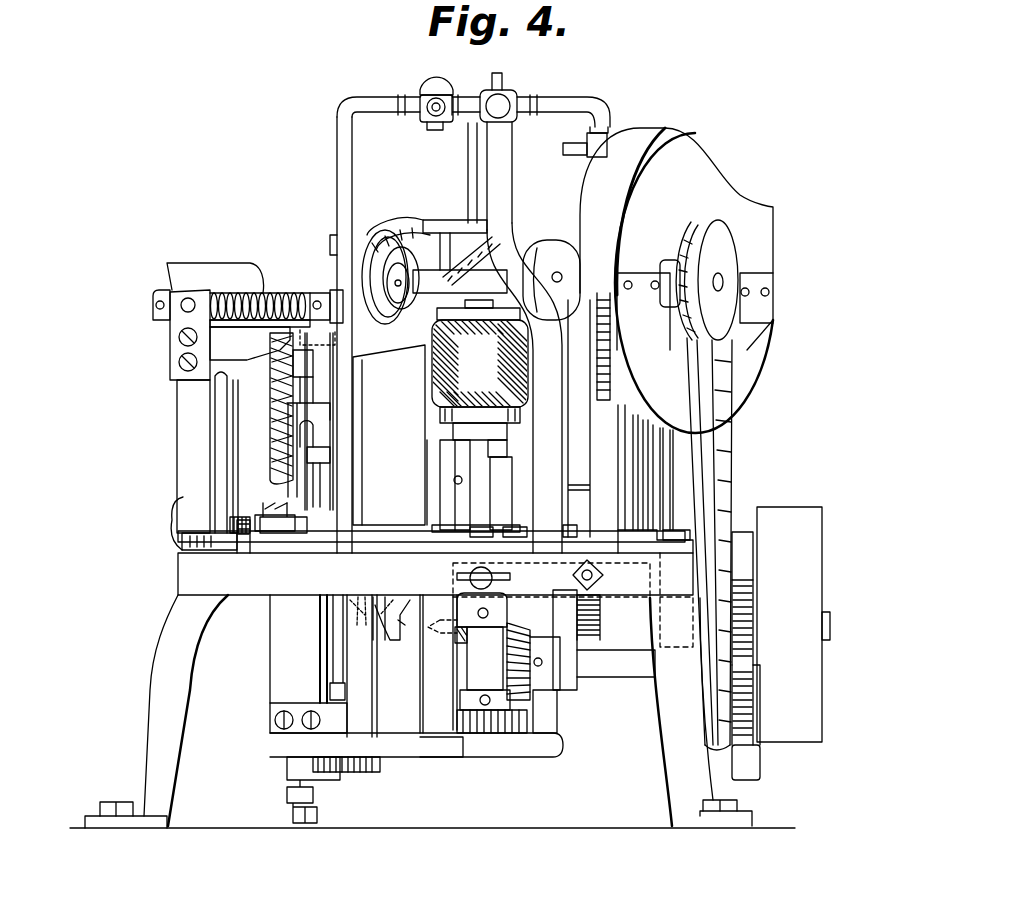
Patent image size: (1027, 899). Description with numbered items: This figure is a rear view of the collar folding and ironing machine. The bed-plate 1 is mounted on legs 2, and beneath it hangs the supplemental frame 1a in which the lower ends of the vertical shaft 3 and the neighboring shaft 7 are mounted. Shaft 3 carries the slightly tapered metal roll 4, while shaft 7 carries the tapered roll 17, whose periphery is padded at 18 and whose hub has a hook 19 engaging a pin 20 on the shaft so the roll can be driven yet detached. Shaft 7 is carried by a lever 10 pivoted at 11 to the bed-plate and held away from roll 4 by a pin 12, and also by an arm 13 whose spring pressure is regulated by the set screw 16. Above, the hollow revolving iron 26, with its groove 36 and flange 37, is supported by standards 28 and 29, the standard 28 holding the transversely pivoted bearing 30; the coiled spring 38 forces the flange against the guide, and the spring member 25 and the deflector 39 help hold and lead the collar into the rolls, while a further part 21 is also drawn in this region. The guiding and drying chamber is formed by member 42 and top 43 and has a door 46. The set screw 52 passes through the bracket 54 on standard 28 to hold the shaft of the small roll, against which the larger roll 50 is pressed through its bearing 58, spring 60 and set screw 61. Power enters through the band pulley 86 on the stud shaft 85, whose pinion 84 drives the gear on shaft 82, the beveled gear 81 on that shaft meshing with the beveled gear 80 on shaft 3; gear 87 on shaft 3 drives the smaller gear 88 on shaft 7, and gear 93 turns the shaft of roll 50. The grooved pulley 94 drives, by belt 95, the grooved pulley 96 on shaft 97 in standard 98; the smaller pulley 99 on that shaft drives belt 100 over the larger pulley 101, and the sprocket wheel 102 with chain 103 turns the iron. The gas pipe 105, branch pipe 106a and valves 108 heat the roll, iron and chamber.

The bed-plate 1 is at (260, 593).
The supplemental frame 1a is at (513, 750).
The legs 2 is at (663, 747).
The vertical shaft 3 is at (463, 667).
The metal roll 4 is at (443, 457).
The shaft 7 is at (485, 658).
The lever 10 is at (323, 537).
The pivot 11 is at (574, 531).
The pin 12 is at (253, 534).
The arm 13 is at (594, 600).
The set screw 16 is at (492, 578).
The tapered roll 17 is at (443, 413).
The padding 18 is at (457, 380).
The hook 19 is at (500, 453).
The pin 20 is at (580, 444).
The bracket 21 is at (336, 295).
The spring member 25 is at (527, 504).
The hollow revolving iron 26 is at (575, 240).
The standard 28 is at (187, 413).
The standard 29 is at (670, 485).
The transversely pivoted bearing 30 is at (200, 293).
The groove 36 is at (573, 230).
The flange 37 is at (531, 242).
The coiled spring 38 is at (287, 296).
The supplemental guide or deflector 39 is at (580, 445).
The member 42 is at (443, 510).
The top 43 is at (507, 640).
The door 46 is at (310, 497).
The roll 50 is at (283, 410).
The set screw 52 is at (357, 232).
The bracket 54 is at (267, 322).
The bearing 58 is at (233, 545).
The spring 60 is at (247, 510).
The set screw 61 is at (173, 531).
The beveled gear wheel 80 is at (495, 620).
The beveled gear wheel 81 is at (527, 703).
The shaft 82 is at (633, 671).
The pinion 84 is at (747, 629).
The stud shaft 85 is at (827, 618).
The band pulley 86 is at (810, 580).
The gear wheel 87 is at (527, 741).
The gear wheel 88 is at (500, 712).
The gear 93 is at (747, 693).
The grooved pulley 94 is at (700, 740).
The belt 95 is at (731, 497).
The grooved pulley 96 is at (720, 237).
The shaft 97 is at (723, 282).
The standard 98 is at (612, 470).
The grooved pulley 99 is at (393, 250).
The belt 100 is at (403, 248).
The grooved pulley 101 is at (431, 268).
The sprocket wheel 102 is at (611, 338).
The sprocket chain 103 is at (612, 372).
The gas pipe 105 is at (425, 100).
The branch pipe 106a is at (472, 152).
The valves 108 is at (497, 90).